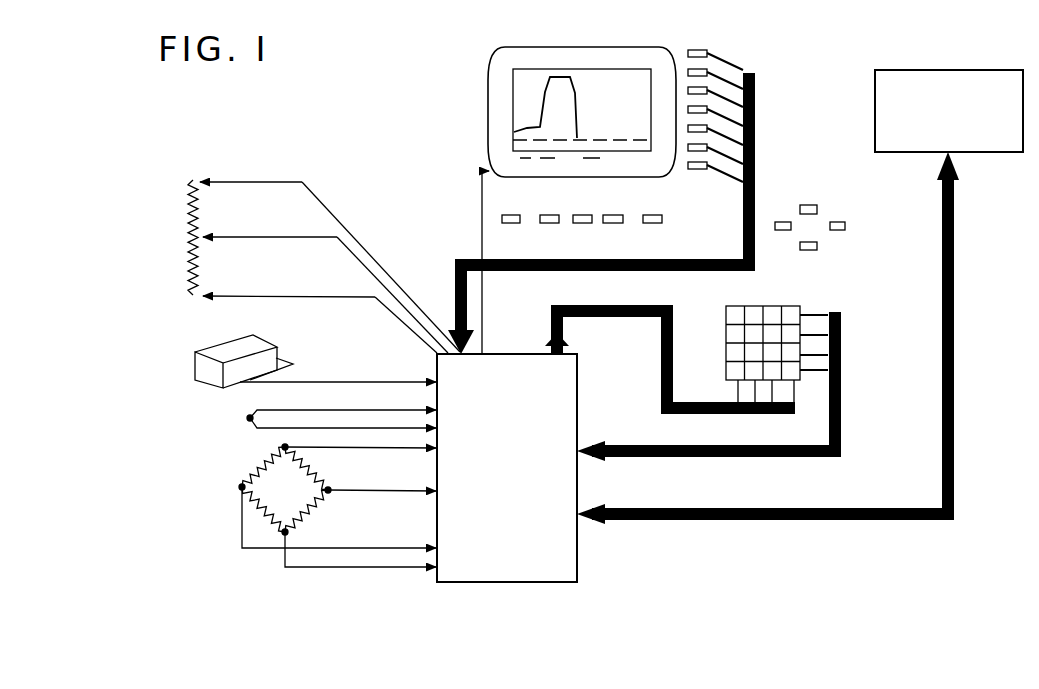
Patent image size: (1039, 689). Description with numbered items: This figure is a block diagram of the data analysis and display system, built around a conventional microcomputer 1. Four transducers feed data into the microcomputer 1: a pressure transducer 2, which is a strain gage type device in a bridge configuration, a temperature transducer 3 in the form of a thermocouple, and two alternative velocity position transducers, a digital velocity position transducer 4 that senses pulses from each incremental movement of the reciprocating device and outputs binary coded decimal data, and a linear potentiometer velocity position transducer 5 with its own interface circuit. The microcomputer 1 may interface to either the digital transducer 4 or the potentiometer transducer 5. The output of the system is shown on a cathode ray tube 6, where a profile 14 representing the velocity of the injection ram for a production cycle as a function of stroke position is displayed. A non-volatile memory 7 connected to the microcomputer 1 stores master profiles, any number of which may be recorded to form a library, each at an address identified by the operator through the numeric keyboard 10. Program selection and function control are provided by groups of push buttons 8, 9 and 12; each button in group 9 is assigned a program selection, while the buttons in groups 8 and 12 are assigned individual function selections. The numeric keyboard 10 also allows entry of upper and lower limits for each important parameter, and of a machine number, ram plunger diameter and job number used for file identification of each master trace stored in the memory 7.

The microcomputer 1 is at (577, 549).
The pressure transducer 2 is at (300, 505).
The temperature transducer 3 is at (249, 424).
The digital velocity position transducer 4 is at (195, 365).
The linear potentiometer velocity position transducer 5 is at (186, 277).
The cathode ray tube 6 is at (488, 103).
The non-volatile memory 7 is at (875, 100).
The group of push buttons 8 is at (662, 219).
The group of push buttons 9 is at (697, 50).
The numeric keyboard 10 is at (776, 306).
The group of push buttons 12 is at (831, 212).
The profile 14 is at (586, 90).